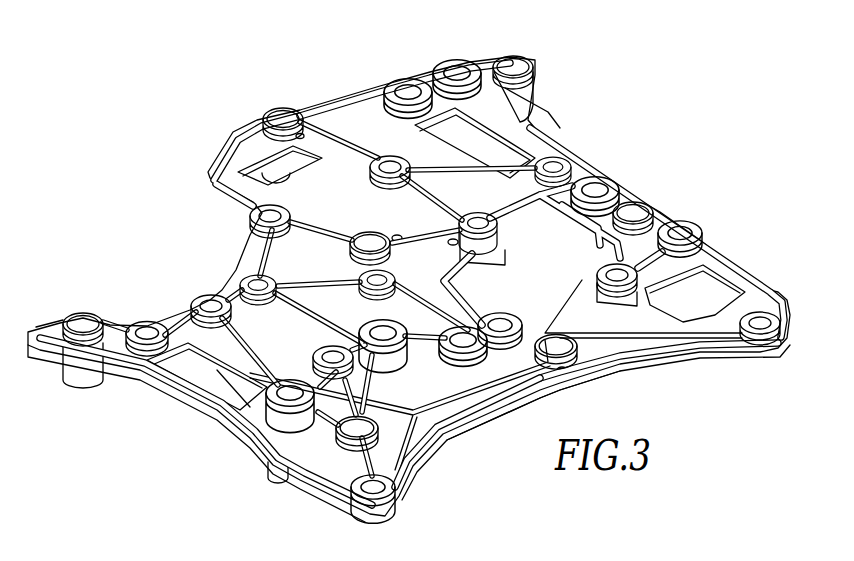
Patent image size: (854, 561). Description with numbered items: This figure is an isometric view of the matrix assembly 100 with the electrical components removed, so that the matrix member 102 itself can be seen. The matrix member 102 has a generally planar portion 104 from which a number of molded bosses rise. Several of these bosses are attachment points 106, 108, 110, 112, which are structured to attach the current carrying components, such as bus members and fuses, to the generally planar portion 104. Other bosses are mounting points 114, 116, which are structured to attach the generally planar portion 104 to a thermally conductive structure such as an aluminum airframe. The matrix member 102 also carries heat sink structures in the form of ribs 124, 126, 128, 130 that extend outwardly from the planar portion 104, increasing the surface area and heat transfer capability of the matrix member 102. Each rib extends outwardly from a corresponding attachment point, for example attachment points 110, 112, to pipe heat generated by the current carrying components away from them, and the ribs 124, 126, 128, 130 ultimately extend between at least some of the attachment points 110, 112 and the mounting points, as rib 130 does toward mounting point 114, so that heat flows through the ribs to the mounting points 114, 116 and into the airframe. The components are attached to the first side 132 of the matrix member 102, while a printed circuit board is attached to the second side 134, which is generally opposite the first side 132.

The matrix assembly 100 is at (183, 455).
The matrix member 102 is at (198, 188).
The generally planar portion 104 is at (390, 140).
The attachment point 106 is at (463, 58).
The attachment point 108 is at (396, 80).
The attachment point 110 is at (378, 190).
The attachment point 112 is at (388, 350).
The mounting point 114 is at (785, 340).
The mounting point 116 is at (397, 498).
The rib 124 is at (452, 186).
The rib 126 is at (432, 197).
The rib 128 is at (414, 343).
The rib 130 is at (632, 367).
The first side 132 is at (488, 403).
The second side 134 is at (441, 450).